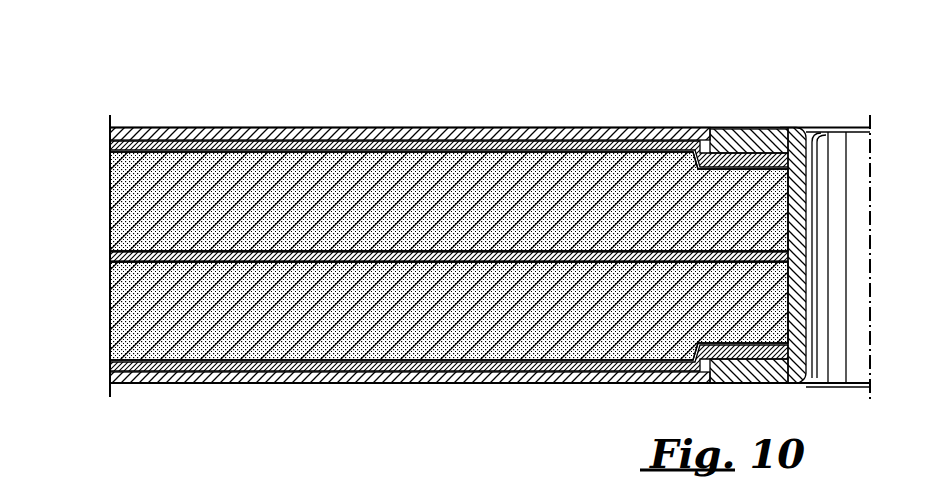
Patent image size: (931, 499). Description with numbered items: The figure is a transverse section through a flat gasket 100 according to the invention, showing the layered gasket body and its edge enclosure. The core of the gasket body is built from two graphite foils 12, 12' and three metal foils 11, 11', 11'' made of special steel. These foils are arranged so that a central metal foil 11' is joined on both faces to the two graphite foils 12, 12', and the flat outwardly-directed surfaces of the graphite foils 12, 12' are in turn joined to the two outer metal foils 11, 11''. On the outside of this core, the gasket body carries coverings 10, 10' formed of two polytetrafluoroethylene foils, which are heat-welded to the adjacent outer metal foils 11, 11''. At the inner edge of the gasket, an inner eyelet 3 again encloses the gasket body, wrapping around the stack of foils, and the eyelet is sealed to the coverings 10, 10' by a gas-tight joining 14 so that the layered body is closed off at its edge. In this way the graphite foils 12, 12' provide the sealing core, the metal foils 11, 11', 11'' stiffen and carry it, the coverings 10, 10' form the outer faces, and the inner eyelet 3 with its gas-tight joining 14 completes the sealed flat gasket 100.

The flat gasket 100 is at (312, 95).
The covering 10 is at (410, 101).
The covering 10' is at (410, 410).
The metal foil 11 is at (415, 148).
The central metal foil 11' is at (415, 261).
The metal foil 11'' is at (415, 367).
The graphite foil 12 is at (415, 201).
The graphite foil 12' is at (415, 311).
The gas-tight joining 14 is at (743, 138).
The inner eyelet 3 is at (778, 128).